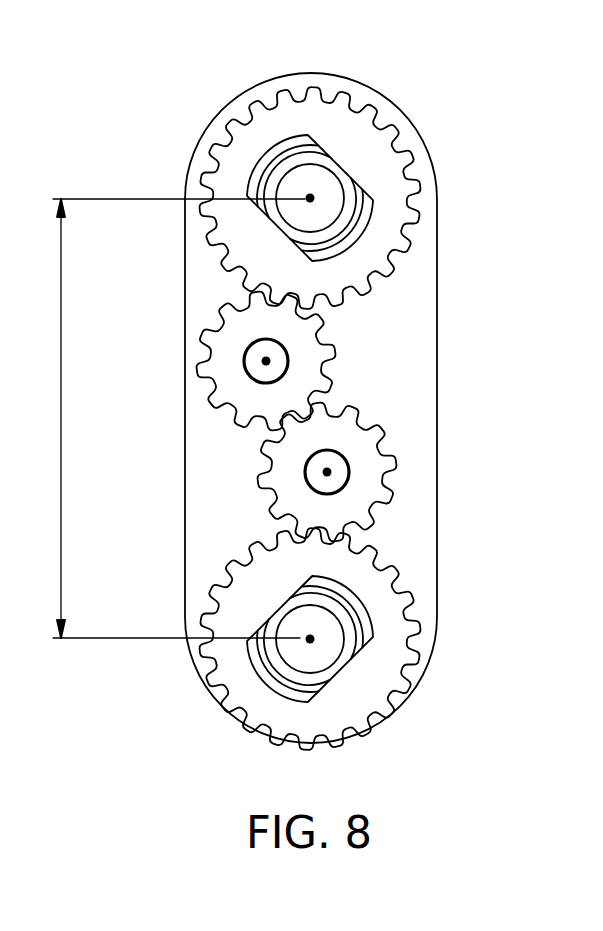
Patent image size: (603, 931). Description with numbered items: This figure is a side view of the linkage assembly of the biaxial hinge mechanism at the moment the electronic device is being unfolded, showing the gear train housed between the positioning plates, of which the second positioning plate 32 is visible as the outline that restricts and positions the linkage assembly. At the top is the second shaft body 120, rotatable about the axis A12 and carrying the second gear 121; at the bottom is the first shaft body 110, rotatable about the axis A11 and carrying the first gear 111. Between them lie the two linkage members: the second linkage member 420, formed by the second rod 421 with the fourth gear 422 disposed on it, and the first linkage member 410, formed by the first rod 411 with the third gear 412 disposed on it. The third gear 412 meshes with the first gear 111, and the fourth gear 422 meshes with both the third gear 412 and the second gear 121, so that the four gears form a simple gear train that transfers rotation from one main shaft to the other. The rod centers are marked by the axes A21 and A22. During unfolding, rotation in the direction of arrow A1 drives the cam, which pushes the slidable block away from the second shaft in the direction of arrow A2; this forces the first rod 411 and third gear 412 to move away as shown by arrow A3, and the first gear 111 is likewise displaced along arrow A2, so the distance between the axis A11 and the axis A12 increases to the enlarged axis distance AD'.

The second positioning plate 32 is at (213, 122).
The first shaft body 110 is at (354, 639).
The first gear 111 is at (390, 615).
The second shaft body 120 is at (354, 198).
The second gear 121 is at (393, 230).
The first linkage member 410 is at (418, 456).
The first rod 411 is at (340, 470).
The third gear 412 is at (365, 458).
The second linkage member 420 is at (337, 360).
The second rod 421 is at (273, 357).
The fourth gear 422 is at (307, 367).
The axis of the first main shaft A11 is at (313, 642).
The axis of the second main shaft A12 is at (313, 196).
The axis of first idler gear A21 is at (330, 475).
The axis of second idler gear A22 is at (262, 360).
The arrow indicating rotation of the first main shaft A1 is at (323, 60).
The arrow indicating movement away from the second main shaft A2 is at (137, 510).
The arrow indicating movement of the first rod and third gear A3 is at (349, 454).
The increased axis distance AD' is at (158, 418).